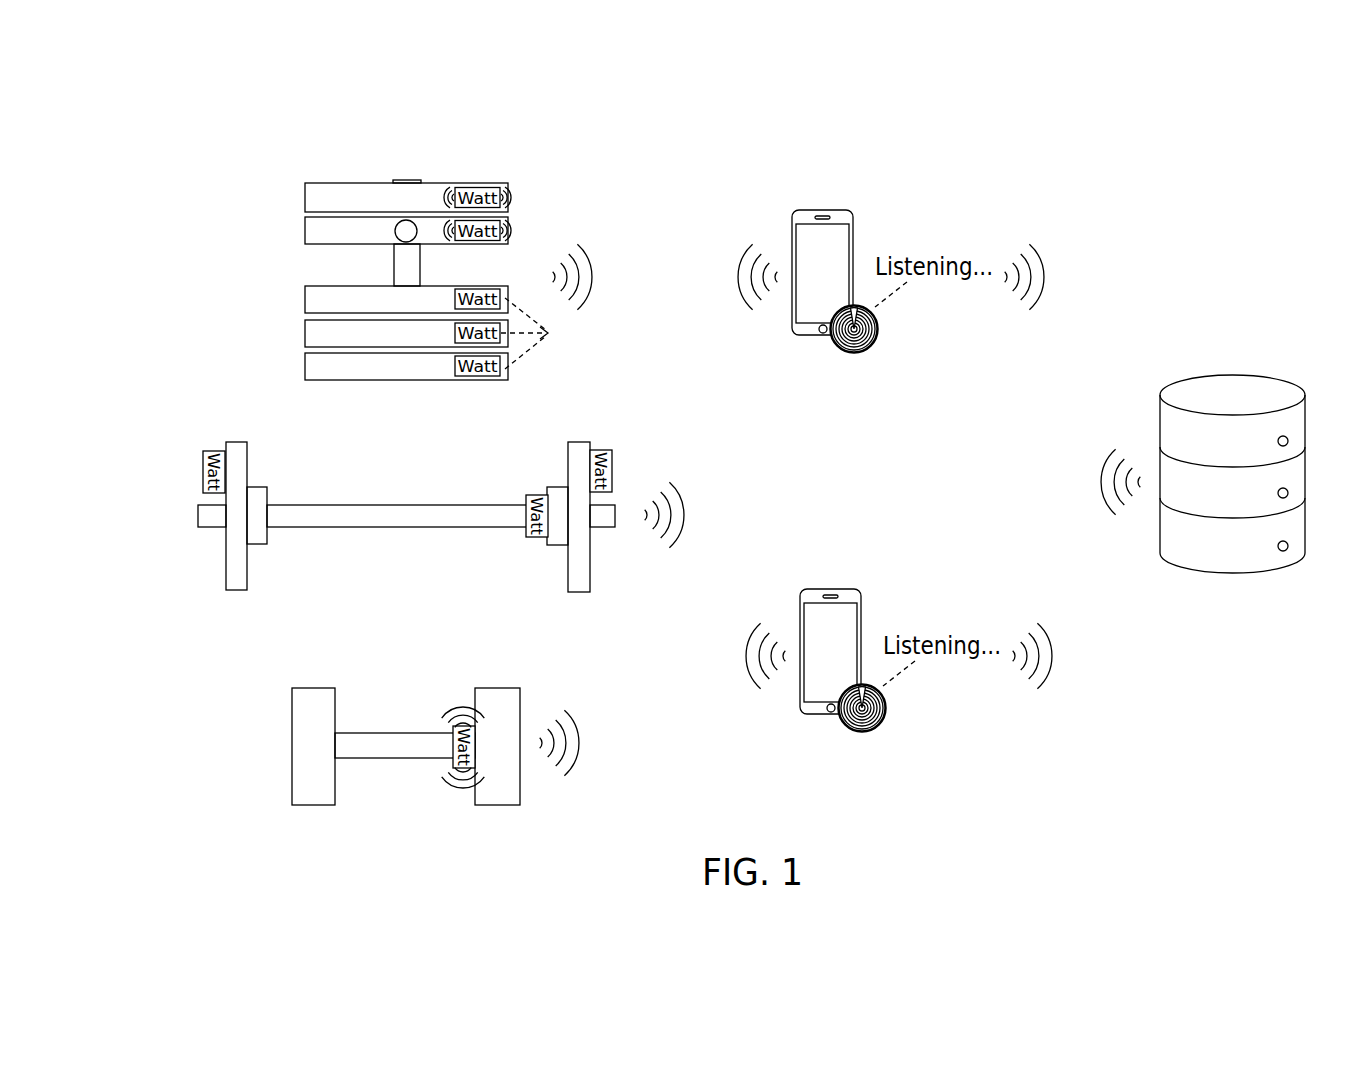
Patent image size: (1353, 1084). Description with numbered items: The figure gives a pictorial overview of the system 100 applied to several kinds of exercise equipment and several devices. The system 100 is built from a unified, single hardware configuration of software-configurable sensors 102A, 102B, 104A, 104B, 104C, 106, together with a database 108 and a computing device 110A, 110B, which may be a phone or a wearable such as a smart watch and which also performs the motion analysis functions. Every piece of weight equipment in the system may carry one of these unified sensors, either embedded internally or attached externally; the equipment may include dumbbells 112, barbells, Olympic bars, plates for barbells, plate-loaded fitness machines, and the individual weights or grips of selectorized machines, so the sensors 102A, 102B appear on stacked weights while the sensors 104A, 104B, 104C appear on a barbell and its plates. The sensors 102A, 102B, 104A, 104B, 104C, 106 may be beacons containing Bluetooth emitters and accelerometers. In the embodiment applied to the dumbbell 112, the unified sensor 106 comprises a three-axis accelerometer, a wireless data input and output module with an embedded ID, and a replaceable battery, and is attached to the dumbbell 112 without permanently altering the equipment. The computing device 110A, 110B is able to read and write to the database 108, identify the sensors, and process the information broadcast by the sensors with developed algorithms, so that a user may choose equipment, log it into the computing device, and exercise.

The system 100 is at (272, 423).
The sensor 102A is at (477, 188).
The sensor 102B is at (455, 363).
The sensor 104A is at (526, 517).
The sensor 104B is at (202, 472).
The sensor 104C is at (612, 460).
The sensor 106 is at (453, 732).
The database 108 is at (1235, 372).
The computing device 110A is at (838, 210).
The computing device 110B is at (848, 589).
The dumbbell 112 is at (292, 745).